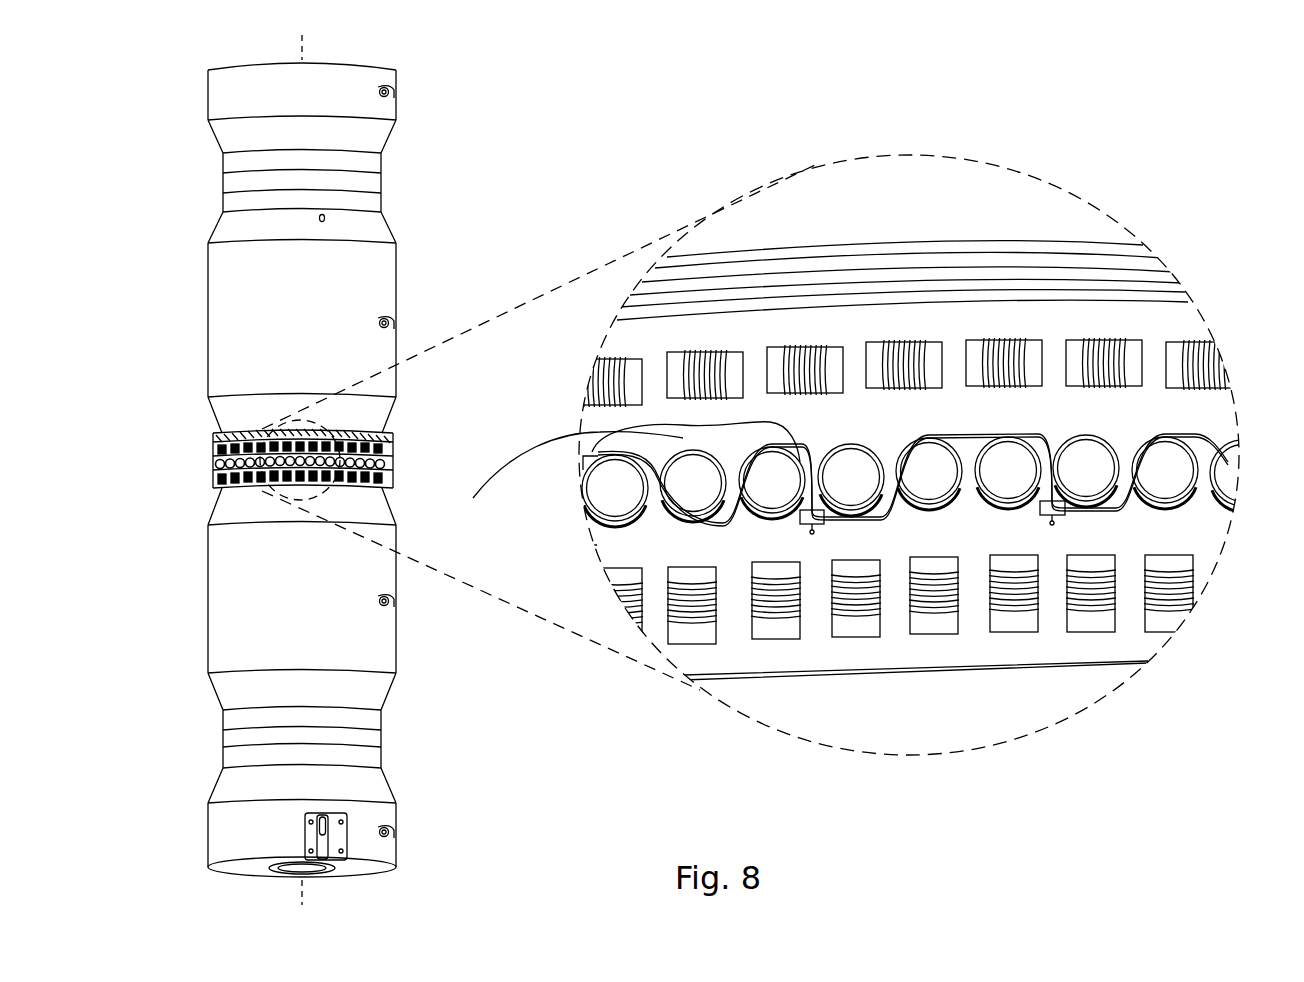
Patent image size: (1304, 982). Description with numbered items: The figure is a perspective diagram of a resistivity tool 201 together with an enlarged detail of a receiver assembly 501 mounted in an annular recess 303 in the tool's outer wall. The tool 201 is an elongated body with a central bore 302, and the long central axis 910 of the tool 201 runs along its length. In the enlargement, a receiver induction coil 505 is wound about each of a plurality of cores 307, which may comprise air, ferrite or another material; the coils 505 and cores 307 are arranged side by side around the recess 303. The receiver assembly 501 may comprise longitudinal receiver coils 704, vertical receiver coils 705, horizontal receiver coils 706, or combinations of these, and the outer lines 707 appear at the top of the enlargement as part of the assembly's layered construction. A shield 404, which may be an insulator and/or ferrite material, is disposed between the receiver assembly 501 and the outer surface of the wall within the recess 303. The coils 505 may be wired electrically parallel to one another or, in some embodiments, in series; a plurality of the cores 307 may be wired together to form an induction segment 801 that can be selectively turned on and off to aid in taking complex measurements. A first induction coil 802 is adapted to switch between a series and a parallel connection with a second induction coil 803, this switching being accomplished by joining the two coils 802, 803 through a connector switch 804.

The resistivity tool 201 is at (172, 228).
The central bore 302 is at (310, 868).
The annular recess 303 is at (885, 708).
The core 307 is at (613, 488).
The shield 404 is at (970, 643).
The receiver assembly 501 is at (203, 490).
The receiver induction coil 505 is at (610, 383).
The longitudinal receiver coils 704 is at (1232, 587).
The vertical receiver coils 705 is at (1255, 468).
The horizontal receiver coils 706 is at (1245, 357).
The outer layer lines 707 is at (1190, 258).
The induction segment 801 is at (683, 433).
The first induction coil 802 is at (974, 420).
The second induction coil 803 is at (1200, 420).
The connector switch 804 is at (1050, 560).
The long central axis 910 is at (302, 888).